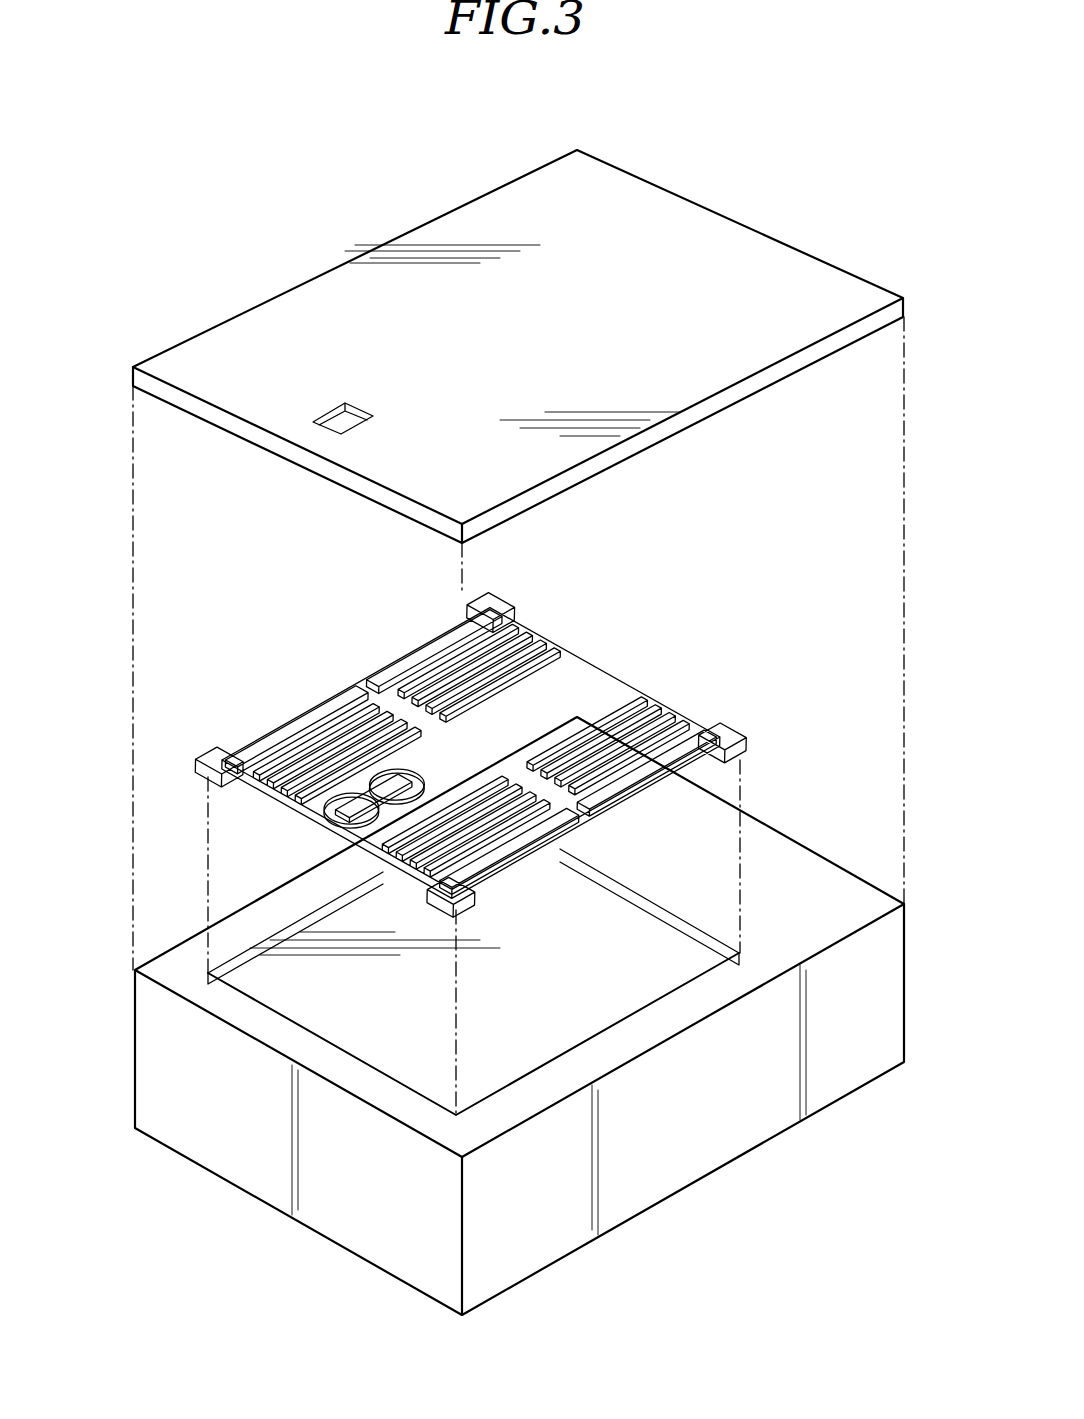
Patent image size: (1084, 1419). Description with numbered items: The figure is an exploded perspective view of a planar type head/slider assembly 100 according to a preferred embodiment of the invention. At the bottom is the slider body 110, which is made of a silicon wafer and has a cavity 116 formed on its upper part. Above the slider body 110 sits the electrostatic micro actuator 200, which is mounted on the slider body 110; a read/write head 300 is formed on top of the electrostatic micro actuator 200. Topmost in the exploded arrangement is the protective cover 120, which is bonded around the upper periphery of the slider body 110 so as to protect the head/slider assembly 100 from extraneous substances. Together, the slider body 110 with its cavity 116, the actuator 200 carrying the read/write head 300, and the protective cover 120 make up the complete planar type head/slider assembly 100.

The planar type head/slider assembly 100 is at (815, 176).
The slider body 110 is at (519, 1016).
The cavity 116 is at (593, 1010).
The protective cover 120 is at (322, 264).
The electrostatic micro actuator 200 is at (471, 754).
The read/write head 300 is at (374, 799).